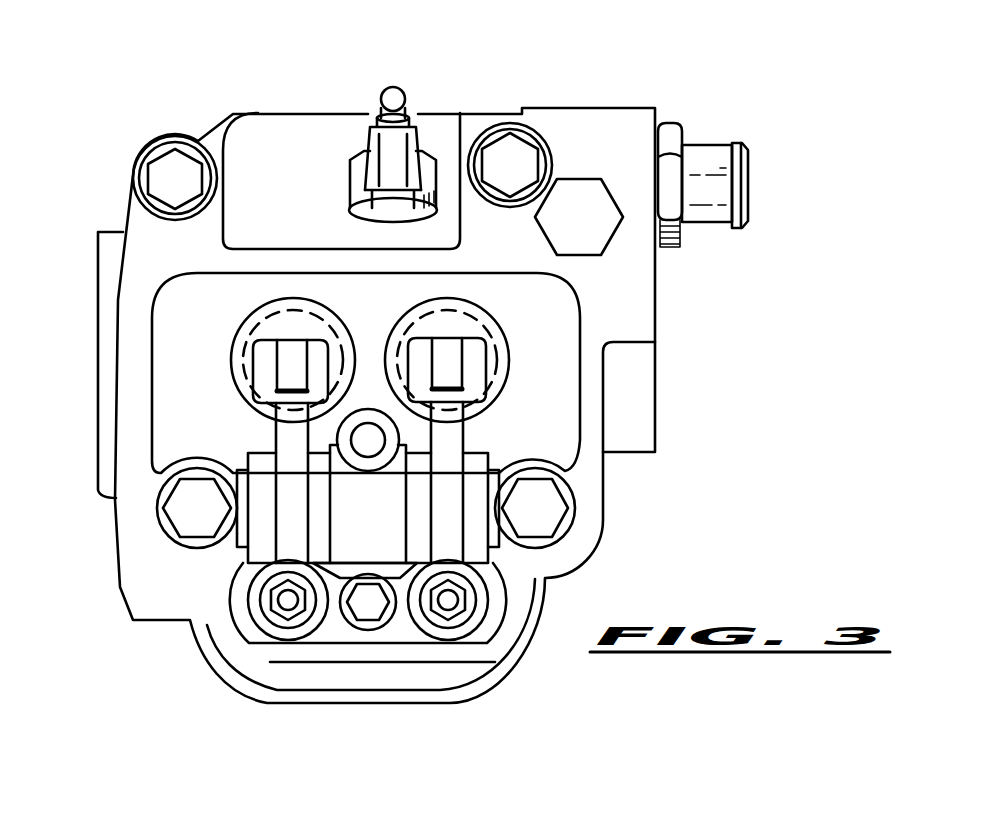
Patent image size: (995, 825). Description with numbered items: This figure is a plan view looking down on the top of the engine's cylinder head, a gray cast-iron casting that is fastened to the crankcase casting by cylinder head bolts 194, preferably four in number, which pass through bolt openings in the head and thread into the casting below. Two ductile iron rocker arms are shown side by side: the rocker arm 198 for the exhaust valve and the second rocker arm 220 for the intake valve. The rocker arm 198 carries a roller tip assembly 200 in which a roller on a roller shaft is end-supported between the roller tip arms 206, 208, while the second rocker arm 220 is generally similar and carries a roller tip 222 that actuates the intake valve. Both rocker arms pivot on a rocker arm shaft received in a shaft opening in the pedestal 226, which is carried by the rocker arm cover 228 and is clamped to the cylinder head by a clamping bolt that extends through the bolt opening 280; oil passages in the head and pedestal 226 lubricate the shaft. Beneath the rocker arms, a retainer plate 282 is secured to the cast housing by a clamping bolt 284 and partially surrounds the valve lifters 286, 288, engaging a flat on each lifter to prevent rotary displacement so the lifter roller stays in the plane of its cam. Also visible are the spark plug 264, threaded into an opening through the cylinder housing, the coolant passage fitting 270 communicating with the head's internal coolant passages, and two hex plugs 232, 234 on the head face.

The cylinder head bolts 194 is at (518, 155).
The rocker arm 198 is at (488, 420).
The roller tip assembly 200 is at (450, 334).
The roller tip arm 206 is at (477, 340).
The roller tip arm 208 is at (423, 368).
The second rocker arm 220 is at (274, 420).
The roller tip 222 is at (293, 345).
The pedestal 226 is at (337, 520).
The rocker arm cover 228 is at (505, 673).
The hex plug 232 is at (543, 518).
The hex plug 234 is at (190, 518).
The spark plug 264 is at (428, 134).
The coolant passage fitting 270 is at (718, 178).
The bolt opening 280 is at (366, 446).
The retainer plate 282 is at (462, 627).
The clamping bolt 284 is at (368, 607).
The valve lifter 286 is at (422, 577).
The valve lifter 288 is at (327, 610).